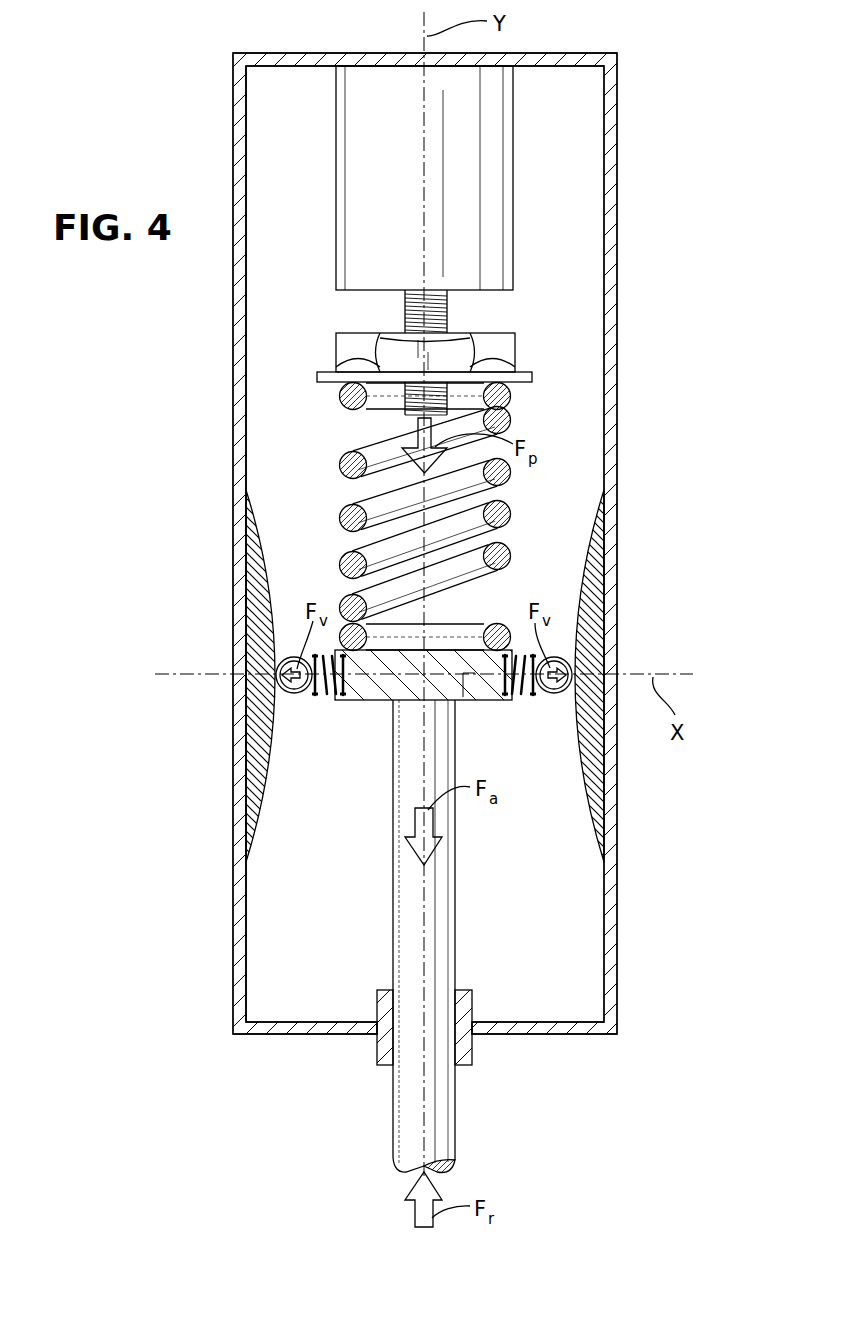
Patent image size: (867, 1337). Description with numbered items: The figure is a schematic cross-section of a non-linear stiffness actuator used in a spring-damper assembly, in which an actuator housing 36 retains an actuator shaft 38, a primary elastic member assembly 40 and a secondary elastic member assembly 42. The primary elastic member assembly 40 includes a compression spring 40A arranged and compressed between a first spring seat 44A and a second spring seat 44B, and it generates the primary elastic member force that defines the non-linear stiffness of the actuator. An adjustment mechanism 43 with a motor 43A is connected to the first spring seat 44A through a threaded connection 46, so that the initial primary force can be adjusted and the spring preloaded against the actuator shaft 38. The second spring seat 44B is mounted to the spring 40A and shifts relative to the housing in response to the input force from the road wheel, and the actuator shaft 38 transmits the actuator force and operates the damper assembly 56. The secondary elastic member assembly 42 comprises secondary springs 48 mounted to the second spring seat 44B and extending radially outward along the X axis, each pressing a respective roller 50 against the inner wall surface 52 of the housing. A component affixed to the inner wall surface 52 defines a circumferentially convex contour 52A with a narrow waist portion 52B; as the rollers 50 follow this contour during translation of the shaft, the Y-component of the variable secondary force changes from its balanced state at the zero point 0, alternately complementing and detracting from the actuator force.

The actuator housing 36 is at (626, 938).
The actuator shaft 38 is at (457, 1132).
The primary elastic member assembly 40 is at (465, 517).
The compression spring 40A is at (344, 470).
The secondary elastic member assembly 42 is at (424, 735).
The adjustment mechanism 43 is at (422, 178).
The motor 43A is at (370, 188).
The first spring seat 44A is at (503, 352).
The second spring seat 44B is at (448, 711).
The threaded connection 46 is at (396, 320).
The secondary springs 48 is at (327, 703).
The rollers 50 is at (292, 700).
The inner wall surface 52 is at (246, 945).
The contour 52A is at (281, 774).
The waist portion 52B is at (282, 644).
The damper assembly 56 is at (646, 246).
The zero point 0 is at (470, 704).